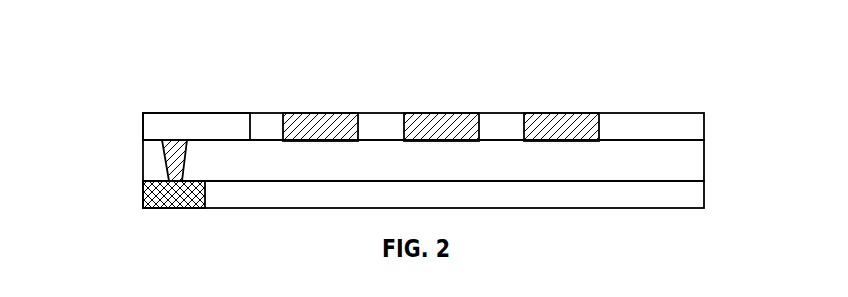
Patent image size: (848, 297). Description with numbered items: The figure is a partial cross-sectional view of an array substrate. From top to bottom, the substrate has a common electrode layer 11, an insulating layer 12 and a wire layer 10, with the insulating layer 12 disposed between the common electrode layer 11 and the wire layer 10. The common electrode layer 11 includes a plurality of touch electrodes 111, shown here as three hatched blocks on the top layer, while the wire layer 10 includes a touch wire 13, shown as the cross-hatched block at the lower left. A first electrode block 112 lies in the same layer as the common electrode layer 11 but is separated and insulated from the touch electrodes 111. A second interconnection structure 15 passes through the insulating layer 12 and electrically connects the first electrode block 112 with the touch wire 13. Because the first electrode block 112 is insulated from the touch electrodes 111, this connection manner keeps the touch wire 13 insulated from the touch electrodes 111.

The wire layer 10 is at (674, 197).
The common electrode layer 11 is at (660, 127).
The insulating layer 12 is at (675, 163).
The touch wire 13 is at (143, 187).
The second interconnection structure 15 is at (167, 158).
The touch electrode 111 is at (322, 113).
The first electrode block 112 is at (208, 113).